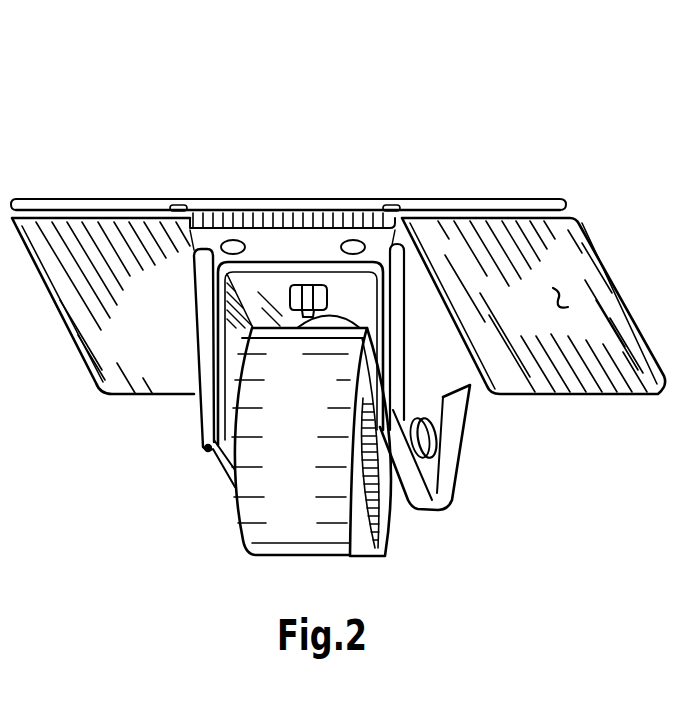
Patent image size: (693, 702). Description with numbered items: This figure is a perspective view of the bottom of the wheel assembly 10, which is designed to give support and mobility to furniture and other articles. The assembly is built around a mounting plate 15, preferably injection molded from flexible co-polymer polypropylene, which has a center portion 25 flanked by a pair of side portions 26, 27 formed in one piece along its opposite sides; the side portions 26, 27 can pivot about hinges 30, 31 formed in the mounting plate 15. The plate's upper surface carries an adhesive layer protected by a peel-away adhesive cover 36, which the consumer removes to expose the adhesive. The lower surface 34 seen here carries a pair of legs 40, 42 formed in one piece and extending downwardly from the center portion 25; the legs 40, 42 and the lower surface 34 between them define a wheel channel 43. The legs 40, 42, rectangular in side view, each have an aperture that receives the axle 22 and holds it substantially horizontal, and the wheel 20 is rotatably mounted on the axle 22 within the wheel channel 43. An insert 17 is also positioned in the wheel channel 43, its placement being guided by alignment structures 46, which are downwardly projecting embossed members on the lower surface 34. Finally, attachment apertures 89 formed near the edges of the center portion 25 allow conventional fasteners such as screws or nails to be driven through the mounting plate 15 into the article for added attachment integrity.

The wheel assembly 10 is at (183, 128).
The mounting plate 15 is at (383, 160).
The insert 17 is at (208, 448).
The wheel 20 is at (280, 505).
The axle 22 is at (433, 445).
The center portion 25 is at (203, 219).
The side portion 26 is at (62, 213).
The side portion 27 is at (512, 209).
The hinge 30 is at (172, 205).
The hinge 31 is at (401, 207).
The lower surface 34 is at (567, 292).
The peel-away adhesive cover 36 is at (306, 206).
The leg 40 is at (213, 407).
The leg 42 is at (467, 417).
The wheel channel 43 is at (406, 522).
The alignment structure 46 is at (313, 284).
The attachment aperture 89 is at (240, 244).